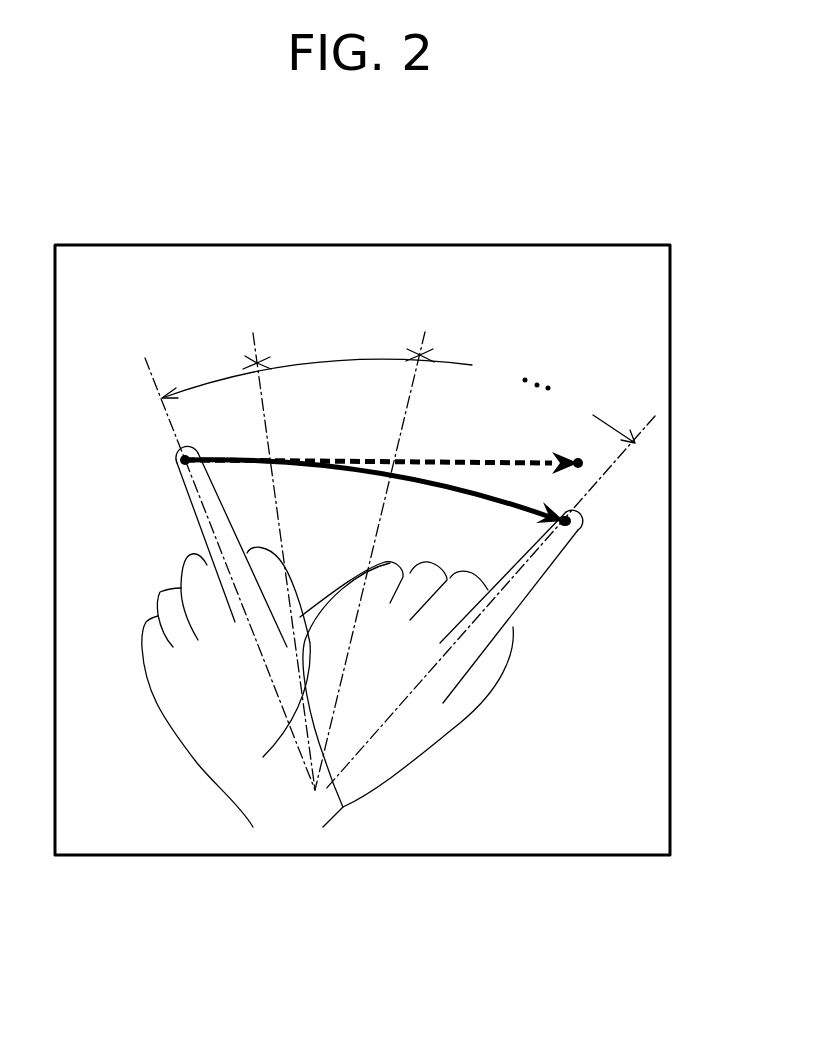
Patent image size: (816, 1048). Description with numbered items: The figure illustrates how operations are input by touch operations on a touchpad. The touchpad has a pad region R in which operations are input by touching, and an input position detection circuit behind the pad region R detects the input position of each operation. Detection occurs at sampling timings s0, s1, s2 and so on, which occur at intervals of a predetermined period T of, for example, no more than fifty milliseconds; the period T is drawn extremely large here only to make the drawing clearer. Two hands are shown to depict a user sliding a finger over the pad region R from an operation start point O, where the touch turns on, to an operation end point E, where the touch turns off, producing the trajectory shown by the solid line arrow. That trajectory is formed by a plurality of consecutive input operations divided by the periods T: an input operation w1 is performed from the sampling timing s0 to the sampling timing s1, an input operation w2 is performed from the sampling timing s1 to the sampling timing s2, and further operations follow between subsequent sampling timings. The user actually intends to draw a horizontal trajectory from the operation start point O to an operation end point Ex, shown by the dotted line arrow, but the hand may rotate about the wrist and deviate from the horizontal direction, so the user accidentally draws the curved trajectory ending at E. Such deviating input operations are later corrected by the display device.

The pad region R is at (577, 260).
The sampling timing s0 is at (224, 561).
The sampling timing s1 is at (279, 548).
The sampling timing s2 is at (378, 548).
The period T is at (317, 358).
The operation start point O is at (175, 466).
The input operation w1 is at (233, 467).
The input operation w2 is at (320, 468).
The operation end point Ex is at (593, 463).
The operation end point E is at (578, 527).